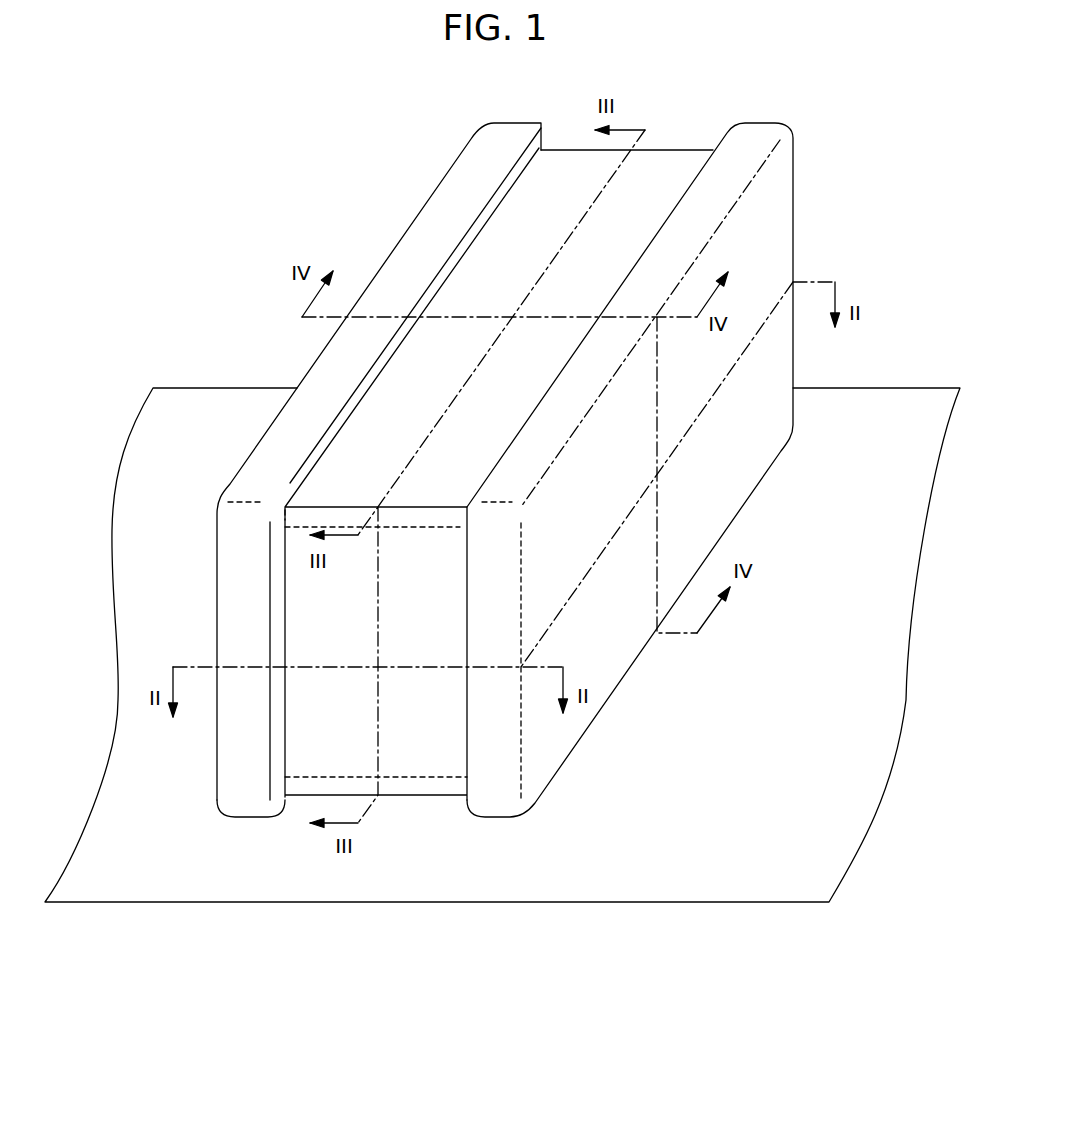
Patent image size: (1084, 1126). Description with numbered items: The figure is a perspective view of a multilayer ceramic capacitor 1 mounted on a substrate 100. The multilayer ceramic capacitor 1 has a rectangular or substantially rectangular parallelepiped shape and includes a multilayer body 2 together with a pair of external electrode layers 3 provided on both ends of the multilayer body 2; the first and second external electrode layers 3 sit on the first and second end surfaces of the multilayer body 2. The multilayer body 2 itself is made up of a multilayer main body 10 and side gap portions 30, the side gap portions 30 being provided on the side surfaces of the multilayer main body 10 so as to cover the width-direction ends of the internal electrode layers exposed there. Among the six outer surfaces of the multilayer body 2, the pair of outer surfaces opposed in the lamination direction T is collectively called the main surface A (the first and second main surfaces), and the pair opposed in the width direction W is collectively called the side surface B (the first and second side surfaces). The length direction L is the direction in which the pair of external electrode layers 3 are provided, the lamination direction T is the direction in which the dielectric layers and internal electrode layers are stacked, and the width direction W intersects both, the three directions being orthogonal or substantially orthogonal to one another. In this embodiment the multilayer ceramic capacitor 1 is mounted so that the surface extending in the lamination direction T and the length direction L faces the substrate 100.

The multilayer ceramic capacitor 1 is at (235, 995).
The multilayer body 2 is at (310, 952).
The external electrode layers 3 is at (225, 763).
The multilayer main body 10 is at (297, 752).
The side gap portions 30 is at (308, 519).
The substrate 100 is at (846, 827).
The main surface A is at (690, 150).
The side surface B is at (500, 447).
The width direction W is at (71, 500).
The length direction L is at (470, 1030).
The lamination direction T is at (835, 582).